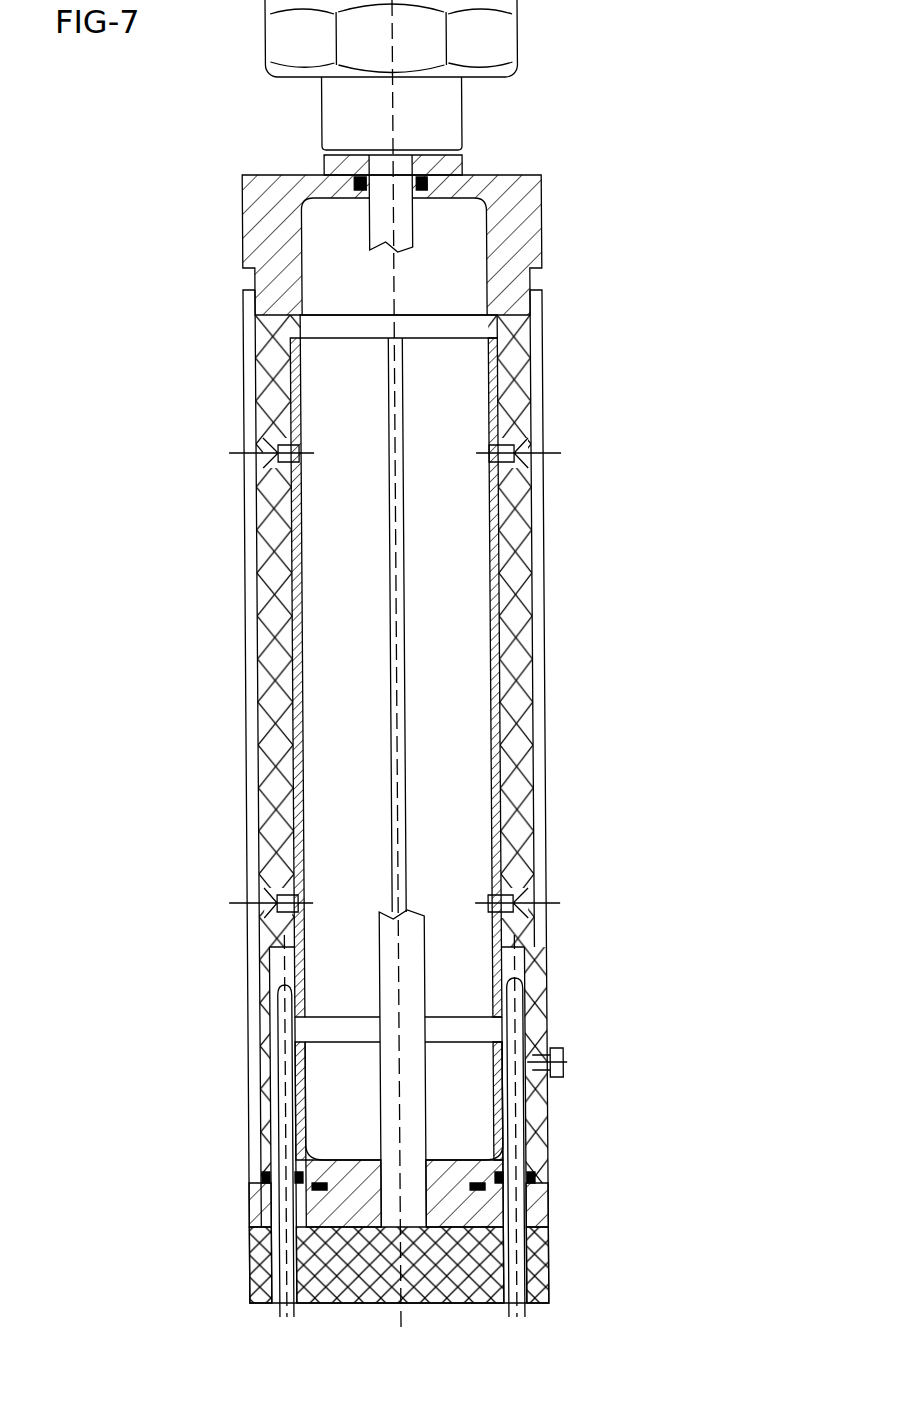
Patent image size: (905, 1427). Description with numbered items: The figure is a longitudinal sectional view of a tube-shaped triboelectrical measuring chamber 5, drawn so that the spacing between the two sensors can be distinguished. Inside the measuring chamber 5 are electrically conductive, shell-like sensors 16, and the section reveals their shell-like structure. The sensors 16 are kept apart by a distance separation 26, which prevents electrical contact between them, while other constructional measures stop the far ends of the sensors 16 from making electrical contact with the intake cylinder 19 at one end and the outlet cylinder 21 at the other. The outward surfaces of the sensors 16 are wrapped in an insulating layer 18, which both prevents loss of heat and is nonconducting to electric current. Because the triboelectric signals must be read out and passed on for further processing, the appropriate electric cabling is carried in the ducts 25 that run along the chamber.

The tube-shaped triboelectrical measuring chamber 5 is at (540, 820).
The shell-like sensors 16 is at (487, 786).
The insulating layer 18 is at (510, 362).
The intake cylinder 19 is at (468, 229).
The outlet cylinder 21 is at (440, 1128).
The ducts 25 is at (279, 1125).
The distance separation 26 is at (396, 477).